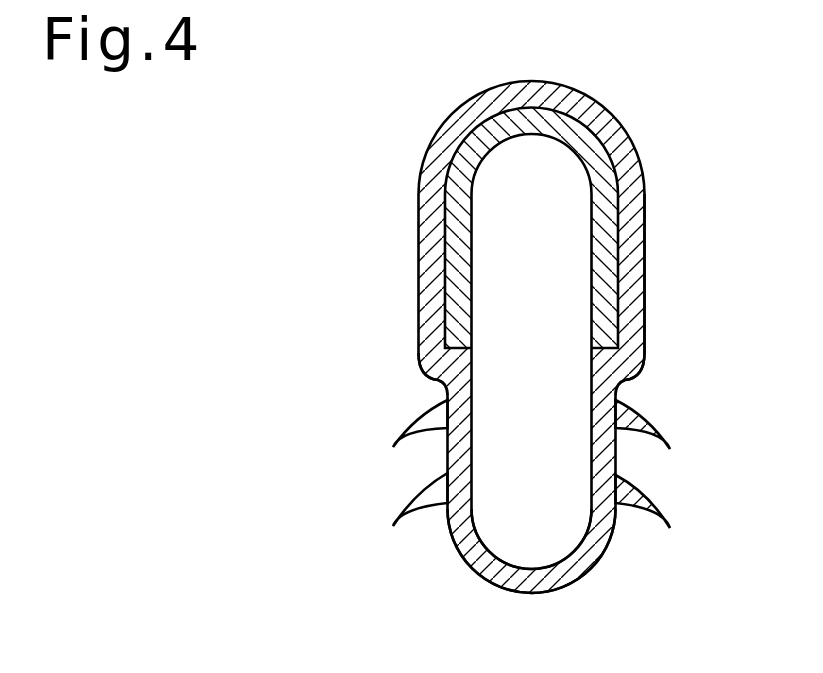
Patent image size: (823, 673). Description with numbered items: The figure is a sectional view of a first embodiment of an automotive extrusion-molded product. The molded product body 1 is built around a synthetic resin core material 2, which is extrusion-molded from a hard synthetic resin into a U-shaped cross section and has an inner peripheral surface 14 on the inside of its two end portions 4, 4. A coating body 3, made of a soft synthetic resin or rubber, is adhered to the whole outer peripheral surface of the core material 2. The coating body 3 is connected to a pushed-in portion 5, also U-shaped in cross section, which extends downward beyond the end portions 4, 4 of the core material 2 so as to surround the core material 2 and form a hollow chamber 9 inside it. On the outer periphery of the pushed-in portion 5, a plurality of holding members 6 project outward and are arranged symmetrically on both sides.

The molded product body 1 is at (432, 125).
The synthetic resin core material 2 is at (580, 137).
The coating body 3 is at (636, 232).
The end portions 4 is at (440, 377).
The pushed-in portion 5 is at (580, 570).
The holding members 6 is at (405, 502).
The hollow chamber 9 is at (512, 531).
The inner peripheral surface 14 is at (473, 203).